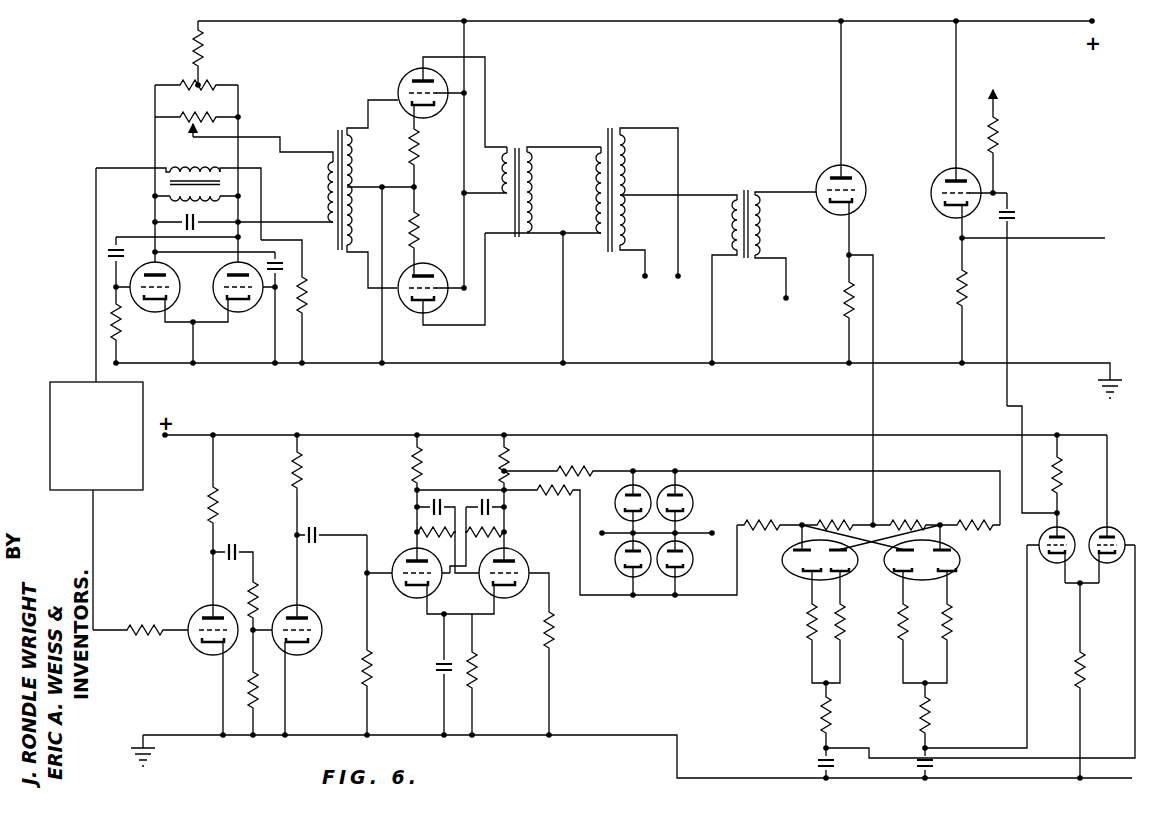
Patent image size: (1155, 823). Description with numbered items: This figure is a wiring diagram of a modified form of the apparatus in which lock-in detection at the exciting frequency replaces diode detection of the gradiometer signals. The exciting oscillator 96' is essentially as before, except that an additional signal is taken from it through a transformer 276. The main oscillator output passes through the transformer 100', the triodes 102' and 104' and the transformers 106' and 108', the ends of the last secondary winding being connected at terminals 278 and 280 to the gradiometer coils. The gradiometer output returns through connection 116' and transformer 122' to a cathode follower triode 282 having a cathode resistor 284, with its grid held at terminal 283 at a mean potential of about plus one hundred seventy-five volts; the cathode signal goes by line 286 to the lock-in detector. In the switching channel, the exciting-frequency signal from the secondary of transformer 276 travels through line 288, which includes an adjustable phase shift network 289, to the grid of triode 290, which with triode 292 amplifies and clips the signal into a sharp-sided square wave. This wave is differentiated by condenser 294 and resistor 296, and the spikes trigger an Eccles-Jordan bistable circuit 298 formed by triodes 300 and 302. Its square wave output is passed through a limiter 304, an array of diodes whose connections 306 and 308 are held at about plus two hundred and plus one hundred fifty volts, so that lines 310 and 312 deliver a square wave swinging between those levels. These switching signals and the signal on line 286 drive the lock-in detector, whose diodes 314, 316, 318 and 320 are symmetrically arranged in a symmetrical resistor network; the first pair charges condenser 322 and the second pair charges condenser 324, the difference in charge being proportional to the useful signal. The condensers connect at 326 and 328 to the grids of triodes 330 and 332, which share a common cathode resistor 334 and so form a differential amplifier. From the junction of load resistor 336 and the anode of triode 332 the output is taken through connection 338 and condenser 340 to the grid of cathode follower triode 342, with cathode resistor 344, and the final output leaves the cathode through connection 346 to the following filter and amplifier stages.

The exciting oscillator 96' is at (195, 281).
The transformer 100' is at (342, 233).
The amplifier triode 102' is at (438, 127).
The amplifier triode 104' is at (441, 267).
The transformer 106' is at (532, 161).
The transformer 108' is at (646, 185).
The connection 116' is at (721, 264).
The transformer 122' is at (772, 254).
The transformer 276 is at (168, 170).
The secondary winding terminal 278 is at (627, 289).
The secondary winding terminal 280 is at (678, 289).
The cathode follower triode 282 is at (822, 178).
The grid bias terminal 283 is at (786, 302).
The cathode resistor 284 is at (843, 295).
The line 286 is at (873, 333).
The line 288 is at (96, 306).
The adjustable phase shift network 289 is at (50, 442).
The triode 290 is at (190, 615).
The triode 292 is at (318, 622).
The condenser 294 is at (318, 522).
The resistor 296 is at (360, 680).
The Eccles-Jordan bistable trigger circuit 298 is at (402, 530).
The triode 300 is at (408, 562).
The triode 302 is at (528, 562).
The limiter 304 is at (652, 472).
The connection 306 is at (600, 532).
The connection 308 is at (712, 531).
The line 310 is at (768, 473).
The line 312 is at (705, 595).
The diode 314 is at (785, 555).
The diode 316 is at (838, 590).
The diode 318 is at (872, 578).
The diode 320 is at (955, 558).
The condenser 322 is at (814, 763).
The condenser 324 is at (938, 764).
The connection 326 is at (1135, 628).
The connection 328 is at (1027, 627).
The triode 330 is at (1097, 527).
The triode 332 is at (1042, 537).
The common cathode resistor 334 is at (1072, 680).
The load resistor 336 is at (1062, 472).
The connection 338 is at (1026, 421).
The condenser 340 is at (1017, 211).
The cathode follower triode 342 is at (940, 178).
The cathode resistor 344 is at (955, 287).
The connection 346 is at (1030, 240).